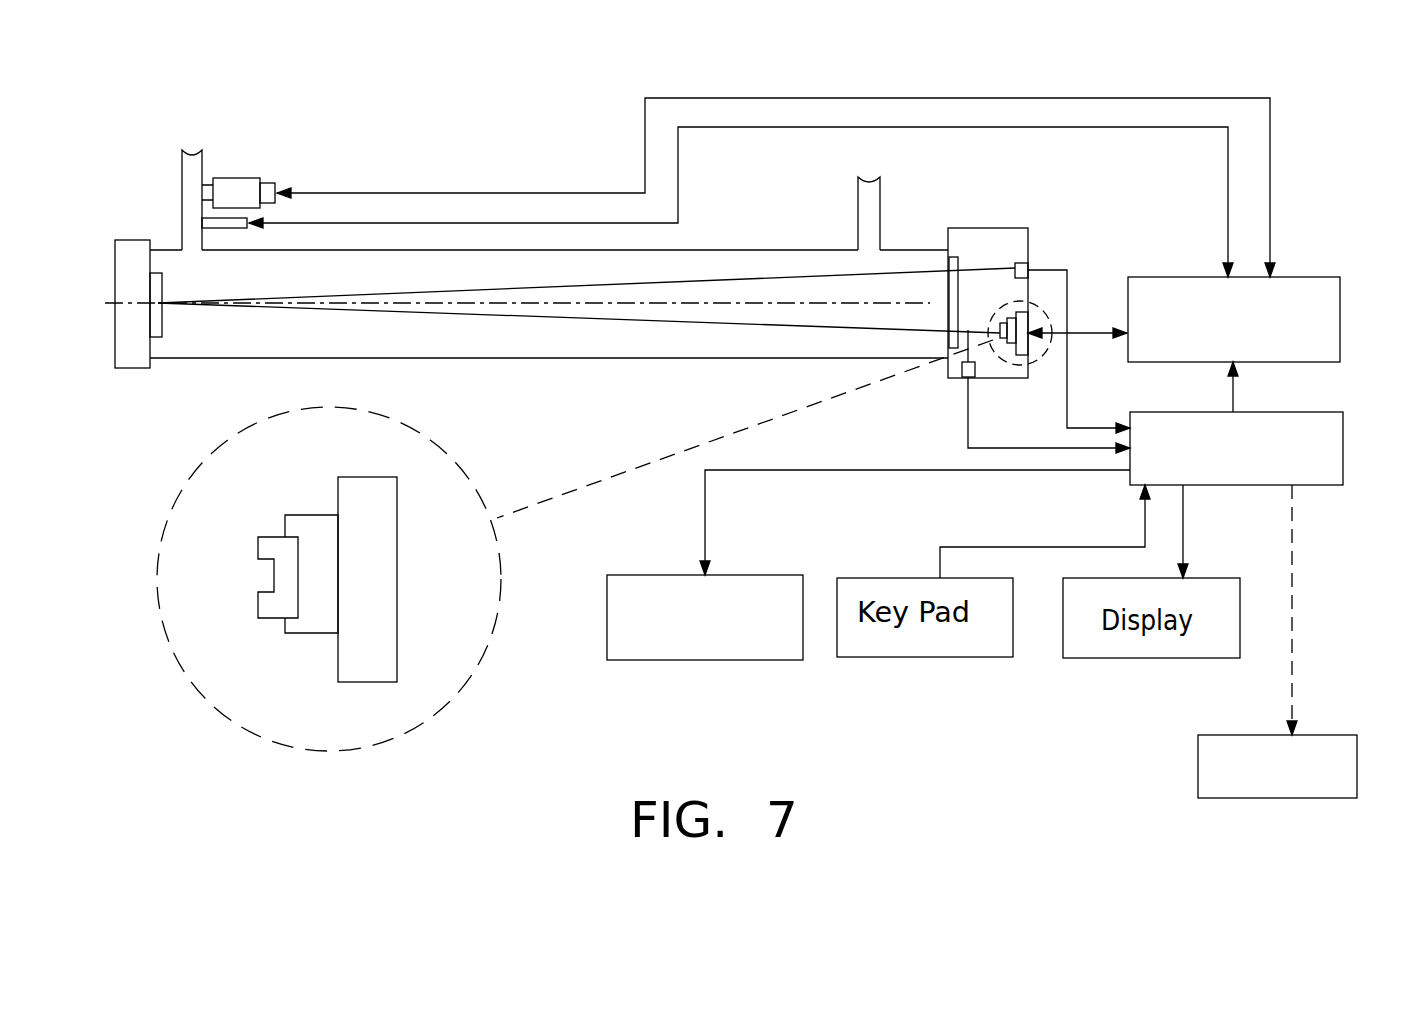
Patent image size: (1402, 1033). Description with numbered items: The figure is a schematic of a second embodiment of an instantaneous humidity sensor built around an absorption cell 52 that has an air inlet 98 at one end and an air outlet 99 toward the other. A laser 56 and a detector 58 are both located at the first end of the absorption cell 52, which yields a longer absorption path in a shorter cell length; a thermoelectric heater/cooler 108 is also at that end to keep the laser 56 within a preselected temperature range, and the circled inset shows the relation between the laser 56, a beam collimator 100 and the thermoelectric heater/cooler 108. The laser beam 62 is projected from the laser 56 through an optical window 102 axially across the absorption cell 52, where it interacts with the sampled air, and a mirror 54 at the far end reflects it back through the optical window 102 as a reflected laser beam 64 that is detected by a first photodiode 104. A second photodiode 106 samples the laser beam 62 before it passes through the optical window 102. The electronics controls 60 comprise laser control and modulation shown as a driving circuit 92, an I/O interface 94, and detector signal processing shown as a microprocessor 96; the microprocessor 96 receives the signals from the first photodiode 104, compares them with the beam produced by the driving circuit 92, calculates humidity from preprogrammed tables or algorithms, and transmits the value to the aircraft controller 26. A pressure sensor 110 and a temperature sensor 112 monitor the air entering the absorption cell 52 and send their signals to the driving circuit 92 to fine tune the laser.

The aircraft controller 26 is at (1198, 762).
The absorption cell 52 is at (265, 360).
The mirror 54 is at (153, 273).
The laser 56 is at (1010, 343).
The detector 58 is at (1082, 249).
The electronics controls 60 is at (1285, 277).
The laser beam 62 is at (383, 312).
The reflected laser beam 64 is at (518, 289).
The driving circuit 92 is at (1305, 277).
The I/O interface 94 is at (735, 660).
The microprocessor 96 is at (1317, 485).
The air inlet 98 is at (192, 165).
The air outlet 99 is at (872, 200).
The beam collimator 100 is at (273, 537).
The optical window 102 is at (953, 292).
The first photodiode 104 is at (1023, 263).
The second photodiode 106 is at (967, 375).
The thermoelectric heater/cooler 108 is at (365, 635).
The pressure sensor 110 is at (243, 176).
The temperature sensor 112 is at (212, 218).